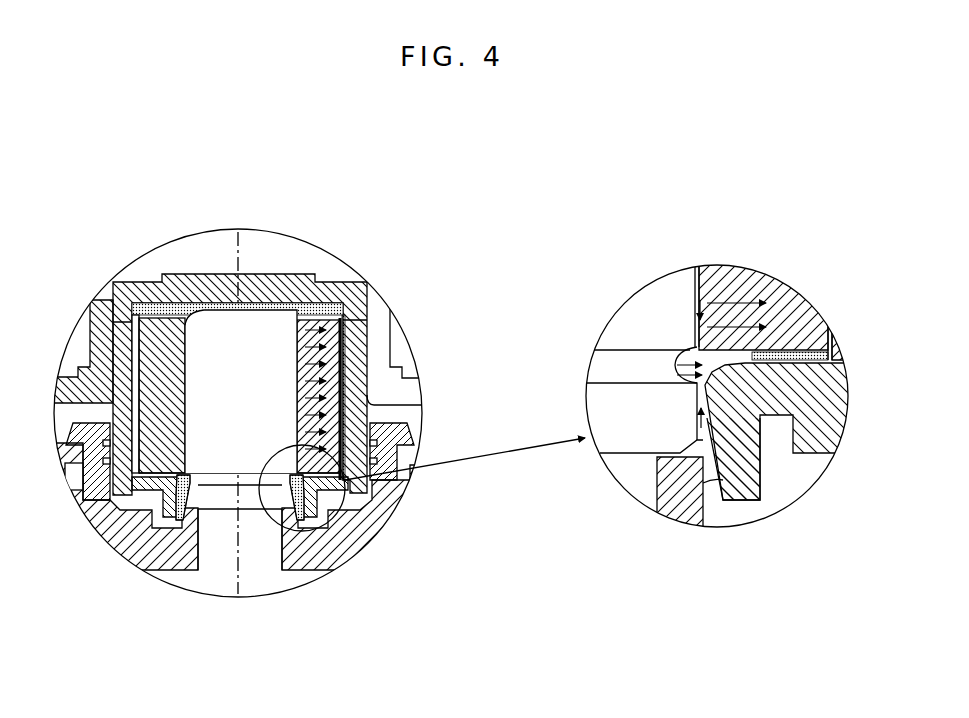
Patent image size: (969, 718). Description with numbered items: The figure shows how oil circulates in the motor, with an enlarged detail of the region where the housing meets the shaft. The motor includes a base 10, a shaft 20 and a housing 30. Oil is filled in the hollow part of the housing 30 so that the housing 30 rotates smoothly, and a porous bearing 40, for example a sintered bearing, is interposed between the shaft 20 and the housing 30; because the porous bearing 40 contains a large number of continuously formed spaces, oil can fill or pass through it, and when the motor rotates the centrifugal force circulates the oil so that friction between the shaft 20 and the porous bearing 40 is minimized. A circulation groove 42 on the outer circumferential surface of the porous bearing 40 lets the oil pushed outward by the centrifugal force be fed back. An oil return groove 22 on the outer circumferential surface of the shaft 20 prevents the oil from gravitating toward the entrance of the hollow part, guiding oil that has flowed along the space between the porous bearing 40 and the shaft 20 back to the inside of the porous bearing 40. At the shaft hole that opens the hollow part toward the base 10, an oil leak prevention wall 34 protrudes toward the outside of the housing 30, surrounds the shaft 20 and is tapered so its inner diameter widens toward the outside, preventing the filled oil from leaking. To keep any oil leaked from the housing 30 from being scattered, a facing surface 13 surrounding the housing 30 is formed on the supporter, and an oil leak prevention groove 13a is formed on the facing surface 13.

The base 10 is at (357, 547).
The facing surface 13 is at (392, 512).
The oil leak prevention groove 13a is at (362, 480).
The shaft 20 is at (218, 322).
The oil return groove 22 is at (231, 490).
The housing 30 is at (284, 274).
The oil leak prevention wall 34 is at (750, 477).
The porous bearing 40 is at (725, 277).
The circulation groove 42 is at (340, 355).